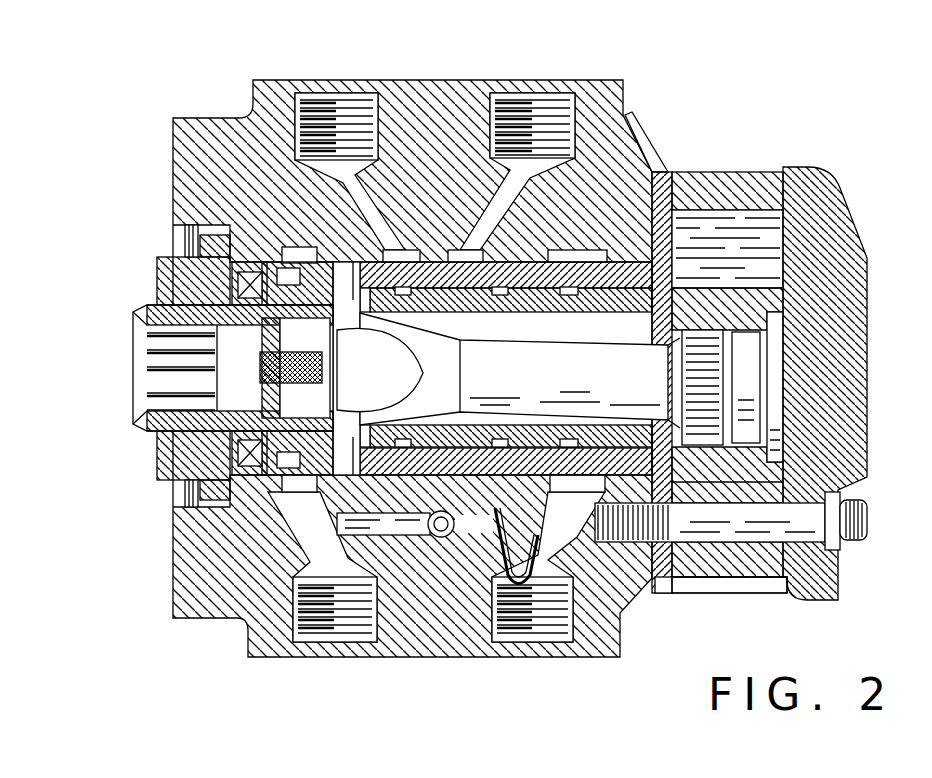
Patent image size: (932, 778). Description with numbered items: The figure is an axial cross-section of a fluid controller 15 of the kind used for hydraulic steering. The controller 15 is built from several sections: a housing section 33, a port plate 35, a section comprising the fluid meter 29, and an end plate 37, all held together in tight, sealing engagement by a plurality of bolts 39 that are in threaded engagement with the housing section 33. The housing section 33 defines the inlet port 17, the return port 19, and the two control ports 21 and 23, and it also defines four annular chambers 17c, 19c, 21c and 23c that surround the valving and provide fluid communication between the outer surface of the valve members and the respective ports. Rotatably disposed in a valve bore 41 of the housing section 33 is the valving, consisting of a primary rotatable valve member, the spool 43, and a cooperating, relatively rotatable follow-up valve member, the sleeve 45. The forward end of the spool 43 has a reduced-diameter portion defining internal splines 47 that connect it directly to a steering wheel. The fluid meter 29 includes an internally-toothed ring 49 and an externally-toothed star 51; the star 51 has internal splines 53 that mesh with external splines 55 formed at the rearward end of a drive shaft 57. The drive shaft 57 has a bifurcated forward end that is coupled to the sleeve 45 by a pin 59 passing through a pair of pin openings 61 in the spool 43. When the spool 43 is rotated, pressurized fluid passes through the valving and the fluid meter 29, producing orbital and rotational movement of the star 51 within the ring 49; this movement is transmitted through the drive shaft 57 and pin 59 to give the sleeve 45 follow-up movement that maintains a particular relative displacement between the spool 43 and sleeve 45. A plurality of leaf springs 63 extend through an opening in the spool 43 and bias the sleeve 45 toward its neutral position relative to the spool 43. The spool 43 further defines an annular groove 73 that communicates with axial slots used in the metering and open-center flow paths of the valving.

The controller 15 is at (778, 128).
The inlet port 17 is at (548, 630).
The annular chamber 17c is at (588, 508).
The return port 19 is at (352, 630).
The annular chamber 19c is at (293, 483).
The control port 21 is at (357, 108).
The annular chamber 21c is at (402, 254).
The control port 23 is at (555, 112).
The annular chamber 23c is at (485, 257).
The fluid meter 29 is at (707, 172).
The housing section 33 is at (210, 142).
The port plate 35 is at (663, 585).
The end plate 37 is at (878, 290).
The bolts 39 is at (873, 510).
The valve bore 41 is at (620, 268).
The spool 43 is at (463, 435).
The sleeve 45 is at (527, 288).
The internal splines 47 is at (153, 382).
The internally-toothed ring 49 is at (728, 567).
The externally-toothed star 51 is at (765, 474).
The internal splines 53 is at (670, 342).
The external splines 55 is at (700, 387).
The drive shaft 57 is at (514, 369).
The pin 59 is at (345, 270).
The pin openings 61 is at (344, 316).
The leaf springs 63 is at (298, 352).
The annular groove 73 is at (572, 294).